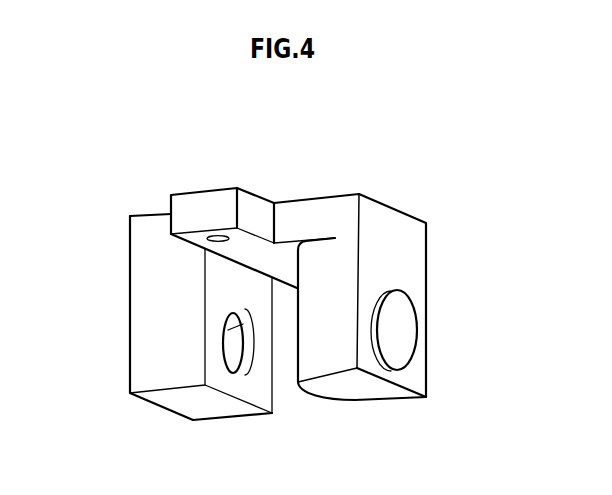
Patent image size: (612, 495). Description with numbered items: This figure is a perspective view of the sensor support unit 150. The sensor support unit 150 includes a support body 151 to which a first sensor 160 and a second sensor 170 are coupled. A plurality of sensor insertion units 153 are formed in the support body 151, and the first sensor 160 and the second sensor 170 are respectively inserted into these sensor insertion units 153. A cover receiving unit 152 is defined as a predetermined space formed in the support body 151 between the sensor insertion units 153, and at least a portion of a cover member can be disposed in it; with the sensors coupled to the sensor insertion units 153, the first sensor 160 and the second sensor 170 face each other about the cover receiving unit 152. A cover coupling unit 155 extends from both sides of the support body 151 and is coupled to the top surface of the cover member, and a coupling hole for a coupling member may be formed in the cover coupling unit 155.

The sensor support unit 150 is at (291, 179).
The support body 151 is at (410, 251).
The cover receiving unit 152 is at (297, 337).
The sensor insertion unit 153 is at (227, 332).
The cover coupling unit 155 is at (190, 220).
The first sensor 160 is at (235, 347).
The second sensor 170 is at (405, 332).